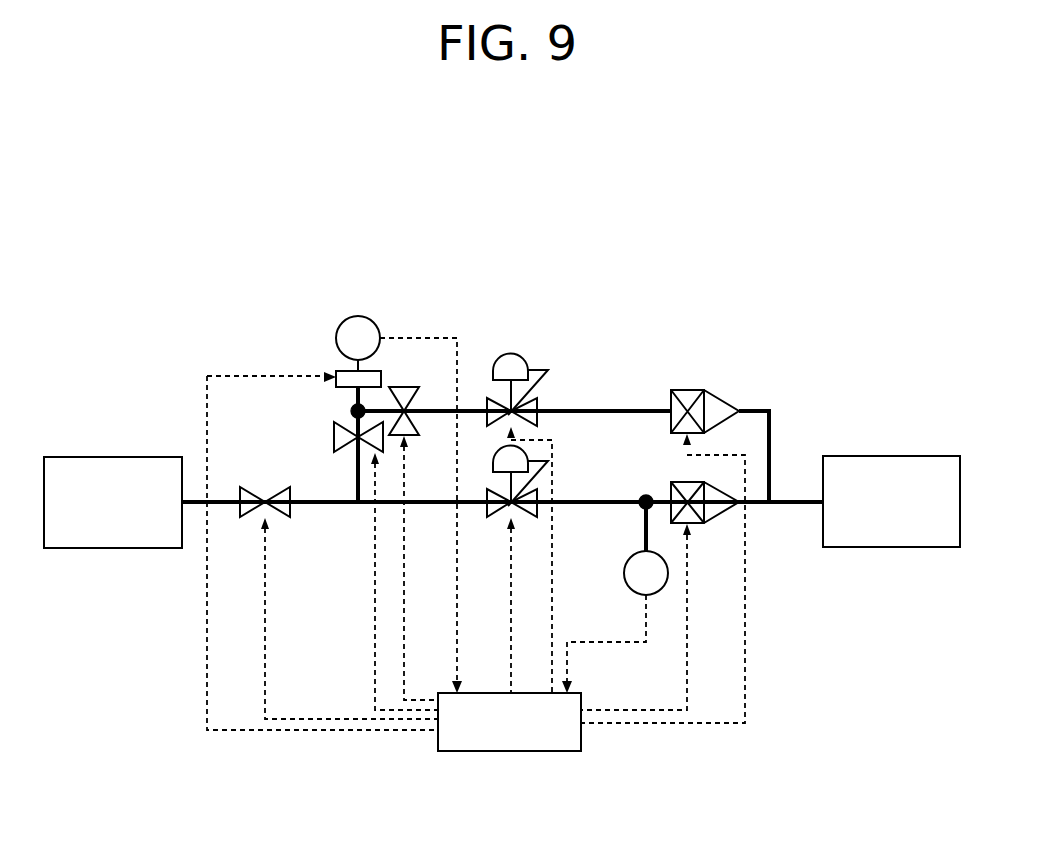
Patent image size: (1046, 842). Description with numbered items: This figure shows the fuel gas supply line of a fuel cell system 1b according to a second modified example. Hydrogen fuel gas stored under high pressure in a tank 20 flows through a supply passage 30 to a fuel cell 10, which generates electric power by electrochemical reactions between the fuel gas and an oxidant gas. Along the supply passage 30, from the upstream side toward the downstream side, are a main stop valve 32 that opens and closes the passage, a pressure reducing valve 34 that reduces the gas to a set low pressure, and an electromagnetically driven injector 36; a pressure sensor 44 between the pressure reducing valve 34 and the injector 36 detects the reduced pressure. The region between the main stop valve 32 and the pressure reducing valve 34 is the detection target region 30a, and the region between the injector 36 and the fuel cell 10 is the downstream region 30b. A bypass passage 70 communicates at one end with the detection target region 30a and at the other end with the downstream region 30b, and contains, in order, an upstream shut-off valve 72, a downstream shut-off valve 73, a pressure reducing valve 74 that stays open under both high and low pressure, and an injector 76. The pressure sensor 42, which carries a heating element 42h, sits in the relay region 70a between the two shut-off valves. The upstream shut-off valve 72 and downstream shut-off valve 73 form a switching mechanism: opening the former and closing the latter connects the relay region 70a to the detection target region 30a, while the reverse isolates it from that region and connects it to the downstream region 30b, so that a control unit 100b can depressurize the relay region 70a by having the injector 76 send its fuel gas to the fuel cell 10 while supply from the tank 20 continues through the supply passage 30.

The fuel cell system 1b is at (628, 316).
The fuel cell 10 is at (925, 456).
The tank 20 is at (103, 457).
The supply passage 30 is at (592, 502).
The detection target region 30a is at (320, 504).
The downstream region 30b is at (783, 504).
The main stop valve 32 is at (290, 491).
The pressure reducing valve 34 is at (490, 488).
The injector 36 is at (672, 482).
The pressure sensor 42 is at (357, 315).
The heating element 42h is at (338, 370).
The pressure sensor 44 is at (638, 550).
The bypass passage 70 is at (757, 409).
The relay region 70a is at (351, 411).
The upstream shut-off valve 72 is at (334, 437).
The downstream shut-off valve 73 is at (406, 388).
The pressure reducing valve 74 is at (511, 354).
The injector 76 is at (688, 389).
The control unit 100b is at (581, 694).